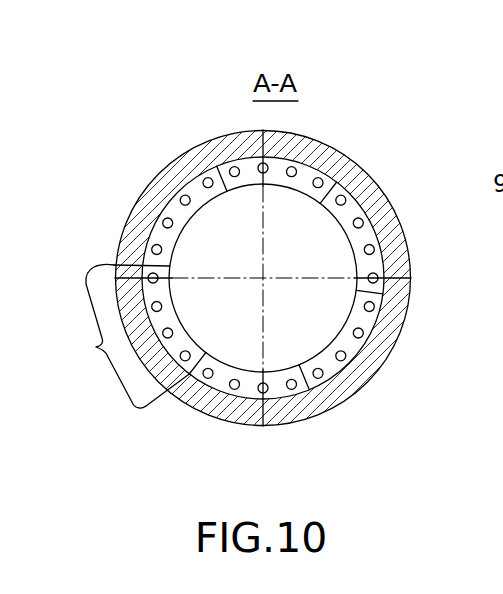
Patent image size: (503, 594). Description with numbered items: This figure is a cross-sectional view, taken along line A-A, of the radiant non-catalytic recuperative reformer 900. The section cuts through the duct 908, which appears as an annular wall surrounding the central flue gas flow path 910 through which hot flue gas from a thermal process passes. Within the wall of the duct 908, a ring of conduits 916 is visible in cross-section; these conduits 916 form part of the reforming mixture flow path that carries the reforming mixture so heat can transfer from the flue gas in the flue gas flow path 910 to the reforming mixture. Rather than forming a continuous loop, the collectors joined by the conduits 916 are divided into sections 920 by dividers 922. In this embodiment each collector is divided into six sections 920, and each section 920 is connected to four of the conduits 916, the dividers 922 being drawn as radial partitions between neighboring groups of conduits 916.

The radiant non-catalytic recuperative reformer 900 is at (339, 125).
The duct 908 is at (183, 168).
The flue gas flow path 910 is at (248, 322).
The conduits 916 is at (164, 221).
The sections 920 is at (122, 336).
The dividers 922 is at (382, 296).